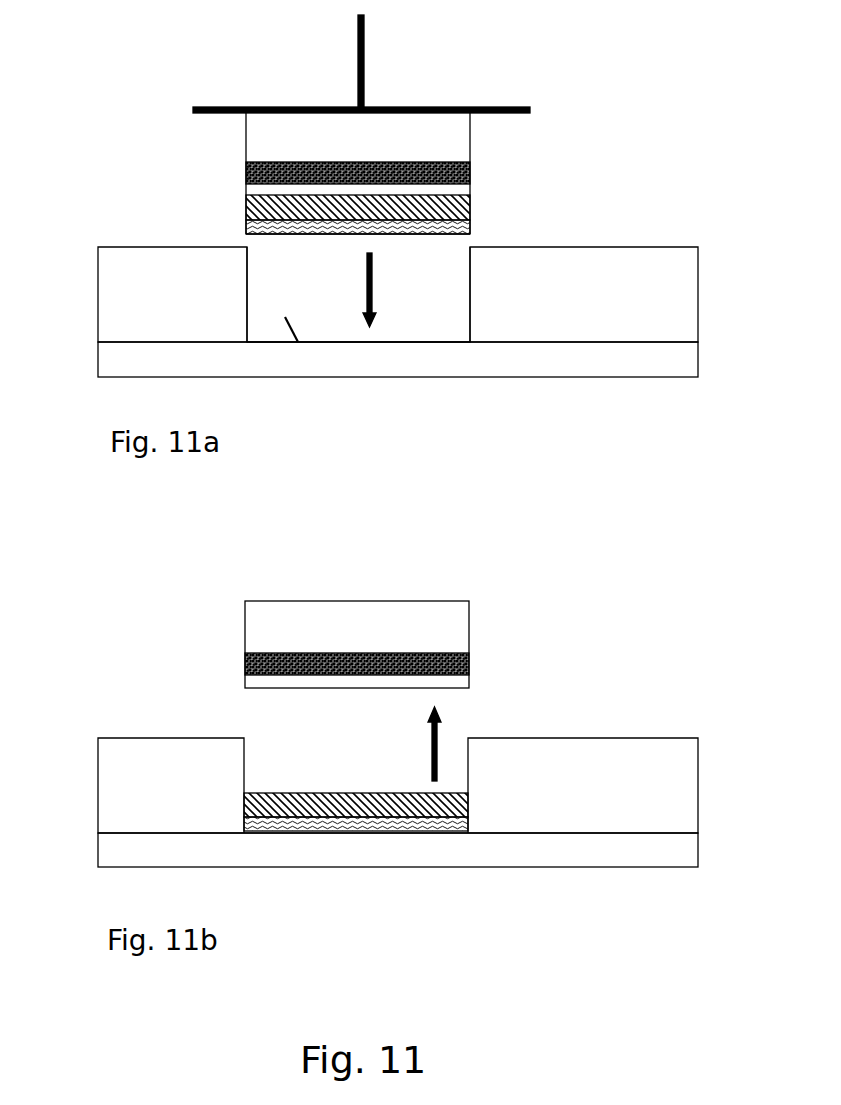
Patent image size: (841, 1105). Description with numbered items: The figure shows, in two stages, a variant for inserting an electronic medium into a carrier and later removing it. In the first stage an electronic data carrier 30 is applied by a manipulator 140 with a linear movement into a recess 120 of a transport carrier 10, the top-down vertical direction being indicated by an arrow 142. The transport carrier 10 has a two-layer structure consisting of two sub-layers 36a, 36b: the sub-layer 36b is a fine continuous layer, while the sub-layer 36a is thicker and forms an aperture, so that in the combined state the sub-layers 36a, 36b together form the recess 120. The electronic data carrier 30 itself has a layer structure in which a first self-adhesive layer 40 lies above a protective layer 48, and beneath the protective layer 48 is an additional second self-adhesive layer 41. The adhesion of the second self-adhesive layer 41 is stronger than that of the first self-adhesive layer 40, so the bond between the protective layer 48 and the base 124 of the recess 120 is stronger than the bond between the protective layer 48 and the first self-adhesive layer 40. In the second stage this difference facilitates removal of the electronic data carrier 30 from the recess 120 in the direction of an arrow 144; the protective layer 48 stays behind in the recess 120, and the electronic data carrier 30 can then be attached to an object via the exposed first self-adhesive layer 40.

In FIG. 11A, the transport carrier 10 is at (92, 311).
In FIG. 11B, the electronic data carrier 30 is at (483, 617).
In FIG. 11A, the sub-layer 36a is at (698, 275).
In FIG. 11B, the sub-layer 36a is at (698, 765).
In FIG. 11A, the sub-layer 36b is at (698, 365).
In FIG. 11B, the sub-layer 36b is at (698, 855).
In FIG. 11A, the first self-adhesive layer 40 is at (471, 190).
In FIG. 11B, the first self-adhesive layer 40 is at (470, 676).
In FIG. 11A, the second self-adhesive layer 41 is at (471, 223).
In FIG. 11B, the second self-adhesive layer 41 is at (356, 824).
In FIG. 11A, the protective layer 48 is at (471, 207).
In FIG. 11B, the protective layer 48 is at (312, 793).
In FIG. 11A, the recess 120 is at (460, 335).
In FIG. 11A, the base 124 is at (285, 317).
In FIG. 11A, the manipulator 140 is at (364, 90).
In FIG. 11A, the arrow 142 is at (366, 292).
In FIG. 11B, the arrow 144 is at (430, 752).